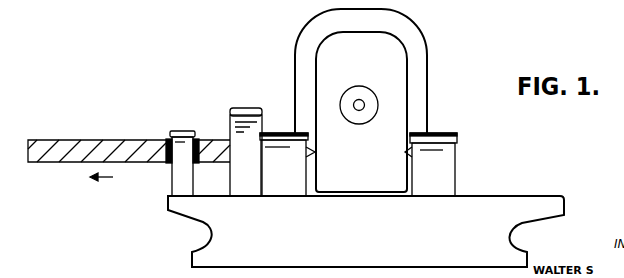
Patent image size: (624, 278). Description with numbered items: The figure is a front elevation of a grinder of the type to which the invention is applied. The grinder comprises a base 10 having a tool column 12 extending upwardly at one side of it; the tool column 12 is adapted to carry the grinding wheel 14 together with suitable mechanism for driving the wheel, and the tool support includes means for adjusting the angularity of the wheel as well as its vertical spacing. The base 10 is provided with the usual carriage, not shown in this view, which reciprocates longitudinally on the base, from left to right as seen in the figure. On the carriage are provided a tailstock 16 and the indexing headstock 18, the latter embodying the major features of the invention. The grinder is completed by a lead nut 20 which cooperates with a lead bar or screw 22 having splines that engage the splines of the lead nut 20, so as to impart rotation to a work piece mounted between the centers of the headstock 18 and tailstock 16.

The base 10 is at (200, 222).
The tool column 12 is at (425, 73).
The grinding wheel 14 is at (374, 119).
The tailstock 16 is at (446, 133).
The indexing headstock 18 is at (247, 108).
The lead nut 20 is at (185, 131).
The lead bar 22 is at (108, 137).